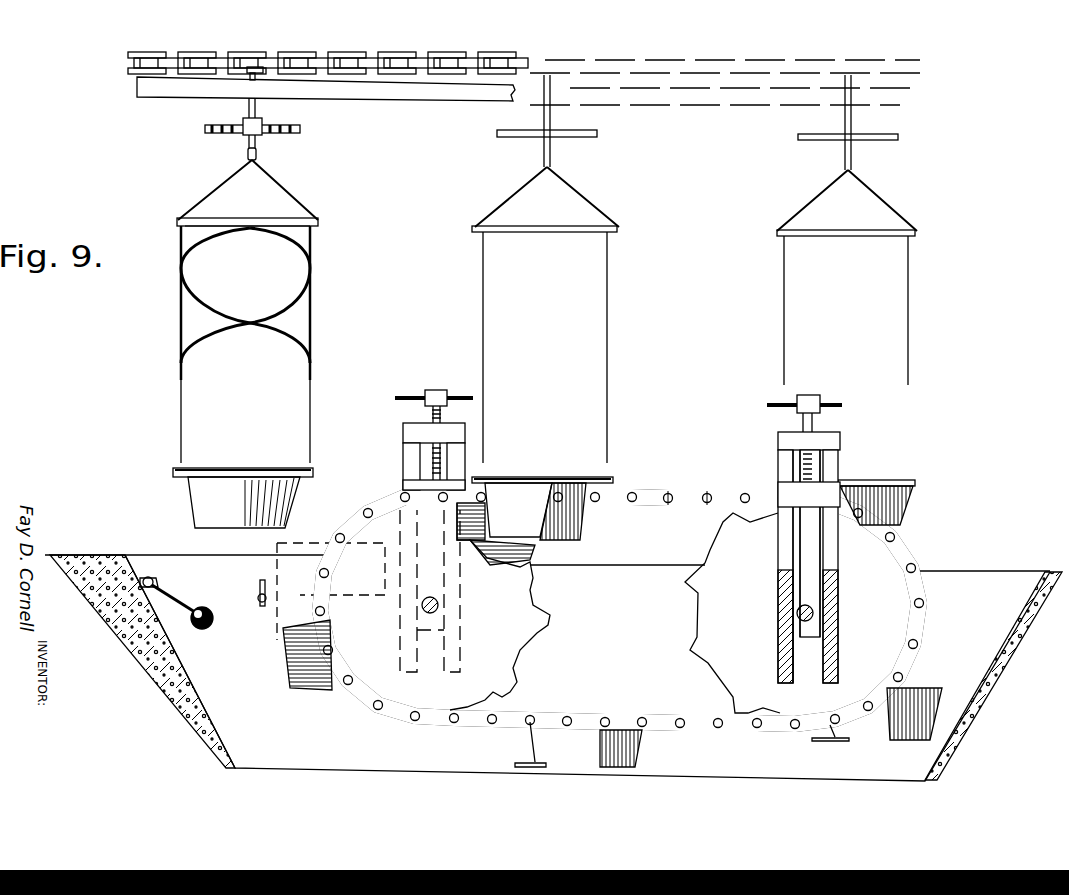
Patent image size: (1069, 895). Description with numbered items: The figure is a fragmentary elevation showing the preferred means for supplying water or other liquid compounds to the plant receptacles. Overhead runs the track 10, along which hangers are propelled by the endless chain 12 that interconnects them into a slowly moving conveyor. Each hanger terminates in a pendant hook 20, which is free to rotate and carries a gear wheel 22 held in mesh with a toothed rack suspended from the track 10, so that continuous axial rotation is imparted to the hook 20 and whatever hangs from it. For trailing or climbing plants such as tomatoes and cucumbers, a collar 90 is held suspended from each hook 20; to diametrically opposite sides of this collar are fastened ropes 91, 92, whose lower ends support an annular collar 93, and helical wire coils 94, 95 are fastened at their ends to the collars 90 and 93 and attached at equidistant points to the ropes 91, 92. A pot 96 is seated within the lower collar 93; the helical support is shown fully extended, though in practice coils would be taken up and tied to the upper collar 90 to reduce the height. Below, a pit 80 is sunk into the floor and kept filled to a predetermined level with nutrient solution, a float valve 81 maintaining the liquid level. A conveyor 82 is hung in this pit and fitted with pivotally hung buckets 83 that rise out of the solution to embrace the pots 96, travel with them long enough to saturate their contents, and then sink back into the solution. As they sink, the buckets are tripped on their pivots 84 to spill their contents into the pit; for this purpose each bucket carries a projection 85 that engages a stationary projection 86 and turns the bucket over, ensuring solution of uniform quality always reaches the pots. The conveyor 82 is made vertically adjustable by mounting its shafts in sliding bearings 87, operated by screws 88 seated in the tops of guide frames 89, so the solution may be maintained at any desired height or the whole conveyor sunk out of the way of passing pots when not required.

The track 10 is at (413, 98).
The endless chain 12 is at (448, 58).
The pendant hook 20 is at (257, 154).
The gear wheel 22 is at (300, 130).
The pit 80 is at (200, 570).
The float valve 81 is at (147, 577).
The conveyor 82 is at (706, 493).
The bucket 83 is at (893, 513).
The pivot 84 is at (585, 720).
The projection 85 is at (262, 590).
The stationary projection 86 is at (259, 603).
The sliding bearing 87 is at (427, 485).
The screw 88 is at (445, 392).
The guide frame 89 is at (410, 430).
The collar 90 is at (322, 222).
The rope 91 is at (180, 325).
The rope 92 is at (312, 337).
The annular collar 93 is at (315, 470).
The helical wire coil 94 is at (188, 293).
The helical wire coil 95 is at (303, 294).
The pot 96 is at (290, 512).